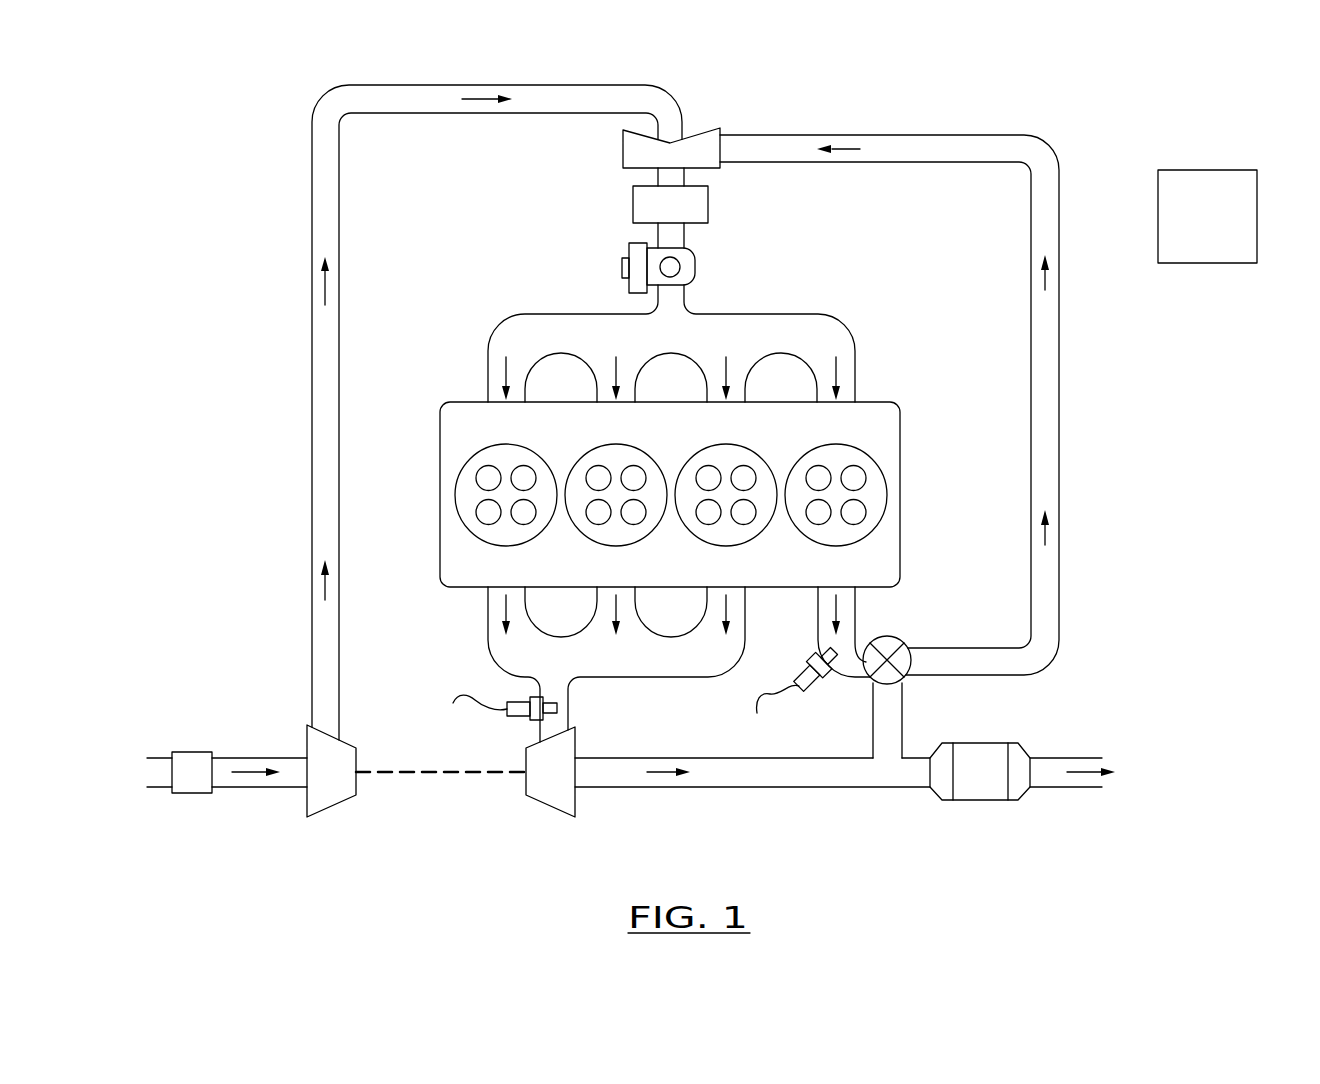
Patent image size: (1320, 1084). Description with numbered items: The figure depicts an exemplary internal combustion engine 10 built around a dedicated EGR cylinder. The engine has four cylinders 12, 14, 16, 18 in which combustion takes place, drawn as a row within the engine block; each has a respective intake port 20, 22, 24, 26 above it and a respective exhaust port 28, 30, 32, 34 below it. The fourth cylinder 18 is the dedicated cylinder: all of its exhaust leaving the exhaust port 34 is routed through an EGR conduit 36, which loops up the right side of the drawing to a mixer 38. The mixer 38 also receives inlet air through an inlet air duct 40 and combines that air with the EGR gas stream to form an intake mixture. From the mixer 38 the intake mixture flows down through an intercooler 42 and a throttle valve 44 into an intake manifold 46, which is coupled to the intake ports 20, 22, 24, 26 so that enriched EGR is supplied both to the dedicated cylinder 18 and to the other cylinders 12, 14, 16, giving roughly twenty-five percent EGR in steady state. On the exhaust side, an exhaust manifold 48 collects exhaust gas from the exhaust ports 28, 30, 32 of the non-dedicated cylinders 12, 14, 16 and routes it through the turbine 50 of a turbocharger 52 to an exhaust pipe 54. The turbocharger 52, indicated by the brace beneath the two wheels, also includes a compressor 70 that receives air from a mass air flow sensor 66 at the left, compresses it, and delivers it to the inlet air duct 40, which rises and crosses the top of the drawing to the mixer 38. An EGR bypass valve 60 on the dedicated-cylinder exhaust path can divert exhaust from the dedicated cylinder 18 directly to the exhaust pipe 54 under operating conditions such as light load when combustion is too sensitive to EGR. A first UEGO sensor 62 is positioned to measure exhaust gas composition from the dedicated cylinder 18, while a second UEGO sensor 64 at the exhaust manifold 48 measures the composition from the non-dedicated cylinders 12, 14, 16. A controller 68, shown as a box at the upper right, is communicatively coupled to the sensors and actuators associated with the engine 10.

The internal combustion engine 10 is at (203, 110).
The cylinder 12 is at (460, 475).
The cylinder 14 is at (580, 458).
The cylinder 16 is at (762, 458).
The dedicated cylinder 18 is at (886, 475).
The intake port 20 is at (490, 398).
The intake port 22 is at (603, 400).
The intake port 24 is at (742, 400).
The intake port 26 is at (853, 400).
The exhaust port 28 is at (488, 597).
The exhaust port 30 is at (622, 590).
The exhaust port 32 is at (745, 597).
The exhaust port 34 is at (853, 594).
The EGR conduit 36 is at (1060, 447).
The mixer 38 is at (623, 155).
The inlet air duct 40 is at (312, 370).
The intercooler 42 is at (708, 208).
The throttle valve 44 is at (697, 268).
The intake manifold 46 is at (821, 314).
The exhaust manifold 48 is at (679, 677).
The turbine 50 is at (586, 782).
The turbocharger 52 is at (474, 800).
The exhaust pipe 54 is at (813, 787).
The EGR bypass valve 60 is at (893, 638).
The first Universal Exhaust Gas Oxygen (UEGO) sensor 62 is at (815, 684).
The second UEGO sensor 64 is at (513, 717).
The mass air flow sensor 66 is at (186, 752).
The controller 68 is at (1208, 170).
The compressor 70 is at (356, 793).